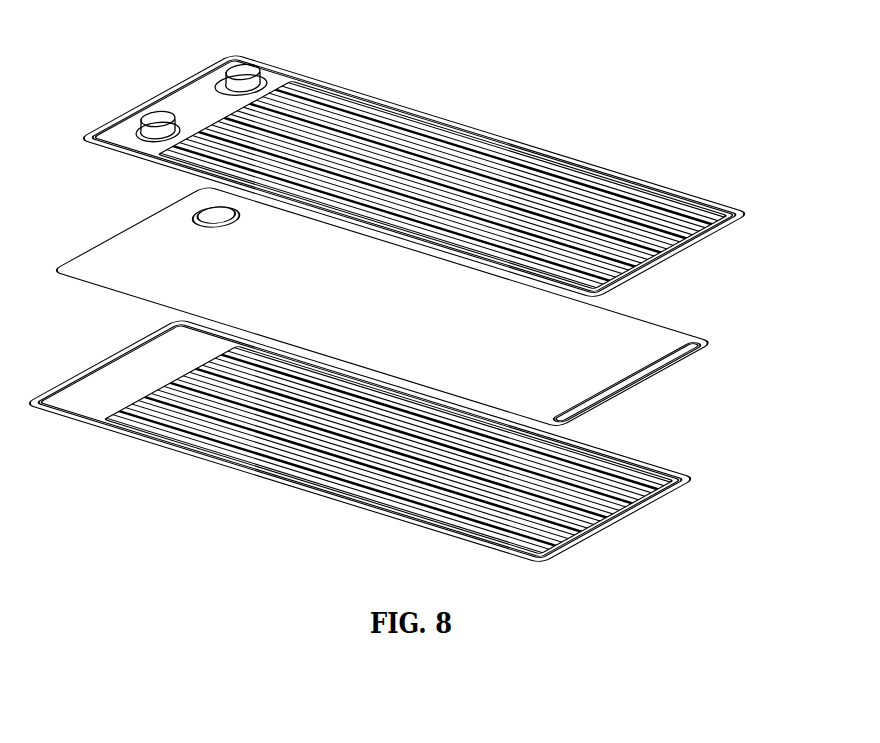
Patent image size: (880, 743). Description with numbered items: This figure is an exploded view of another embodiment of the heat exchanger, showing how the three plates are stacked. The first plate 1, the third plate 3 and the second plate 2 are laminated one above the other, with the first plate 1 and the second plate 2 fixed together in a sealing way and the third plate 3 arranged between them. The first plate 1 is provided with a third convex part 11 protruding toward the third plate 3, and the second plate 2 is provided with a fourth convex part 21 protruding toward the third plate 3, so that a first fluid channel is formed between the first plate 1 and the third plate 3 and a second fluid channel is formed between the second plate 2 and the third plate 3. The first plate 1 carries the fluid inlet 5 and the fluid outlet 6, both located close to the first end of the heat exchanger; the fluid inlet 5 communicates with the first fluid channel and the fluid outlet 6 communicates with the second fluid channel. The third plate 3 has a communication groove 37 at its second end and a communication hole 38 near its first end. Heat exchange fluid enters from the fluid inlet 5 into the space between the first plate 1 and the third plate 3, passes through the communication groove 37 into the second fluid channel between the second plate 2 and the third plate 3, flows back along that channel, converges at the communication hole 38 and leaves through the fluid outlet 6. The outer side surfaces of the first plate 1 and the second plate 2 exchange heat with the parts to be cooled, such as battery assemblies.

The first plate 1 is at (543, 147).
The third convex part 11 is at (603, 190).
The fluid inlet 5 is at (137, 127).
The fluid outlet 6 is at (242, 63).
The third plate 3 is at (628, 322).
The communication hole 38 is at (213, 218).
The communication groove 37 is at (693, 347).
The second plate 2 is at (618, 453).
The fourth convex part 21 is at (590, 487).